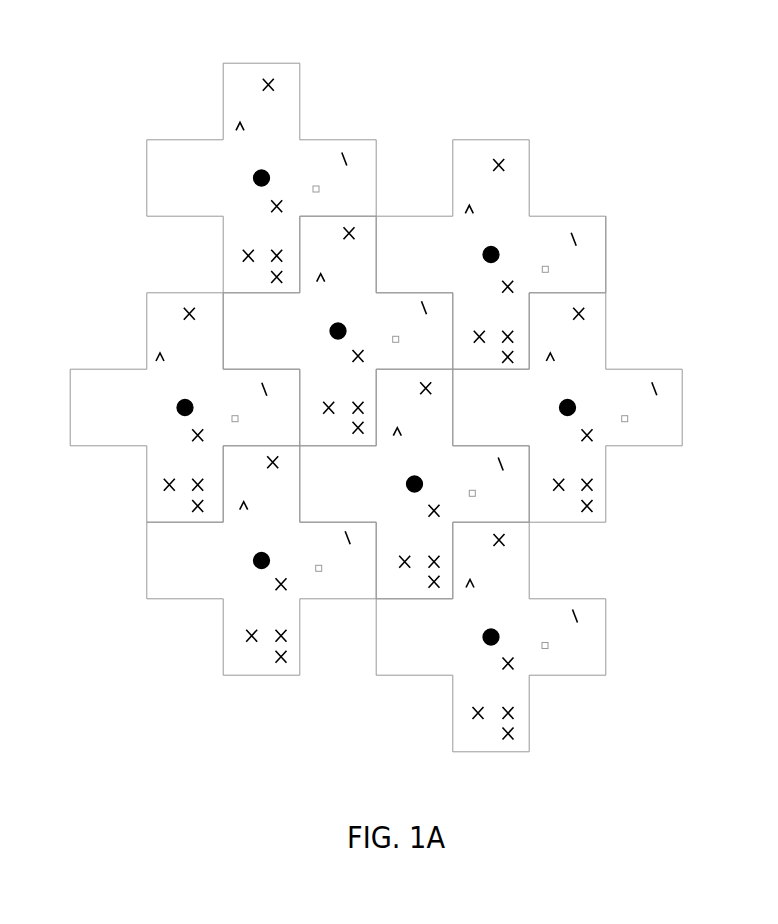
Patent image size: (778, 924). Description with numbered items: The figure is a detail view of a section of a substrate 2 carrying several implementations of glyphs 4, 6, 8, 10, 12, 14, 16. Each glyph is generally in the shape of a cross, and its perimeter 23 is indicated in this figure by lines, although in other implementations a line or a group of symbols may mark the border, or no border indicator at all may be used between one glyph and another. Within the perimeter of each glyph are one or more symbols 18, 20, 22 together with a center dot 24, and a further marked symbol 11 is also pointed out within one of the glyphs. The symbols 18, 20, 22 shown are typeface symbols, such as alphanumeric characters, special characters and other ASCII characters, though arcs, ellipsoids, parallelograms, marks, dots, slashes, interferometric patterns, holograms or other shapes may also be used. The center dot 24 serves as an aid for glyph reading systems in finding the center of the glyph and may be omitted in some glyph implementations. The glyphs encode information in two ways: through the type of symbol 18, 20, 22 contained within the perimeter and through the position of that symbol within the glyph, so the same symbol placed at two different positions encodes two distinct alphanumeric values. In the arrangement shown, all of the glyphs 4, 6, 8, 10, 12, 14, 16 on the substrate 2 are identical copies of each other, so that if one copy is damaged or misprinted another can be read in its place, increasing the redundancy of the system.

The substrate 2 is at (40, 551).
The glyph 4 is at (185, 407).
The glyph 6 is at (204, 149).
The glyph 8 is at (244, 628).
The glyph 10 is at (518, 637).
The X marking 11 is at (597, 503).
The glyph 12 is at (491, 493).
The glyph 14 is at (510, 187).
The glyph 16 is at (357, 263).
The symbol 18 is at (157, 364).
The symbol 20 is at (547, 650).
The symbol 22 is at (583, 617).
The perimeter 23 is at (607, 234).
The center dot 24 is at (572, 400).